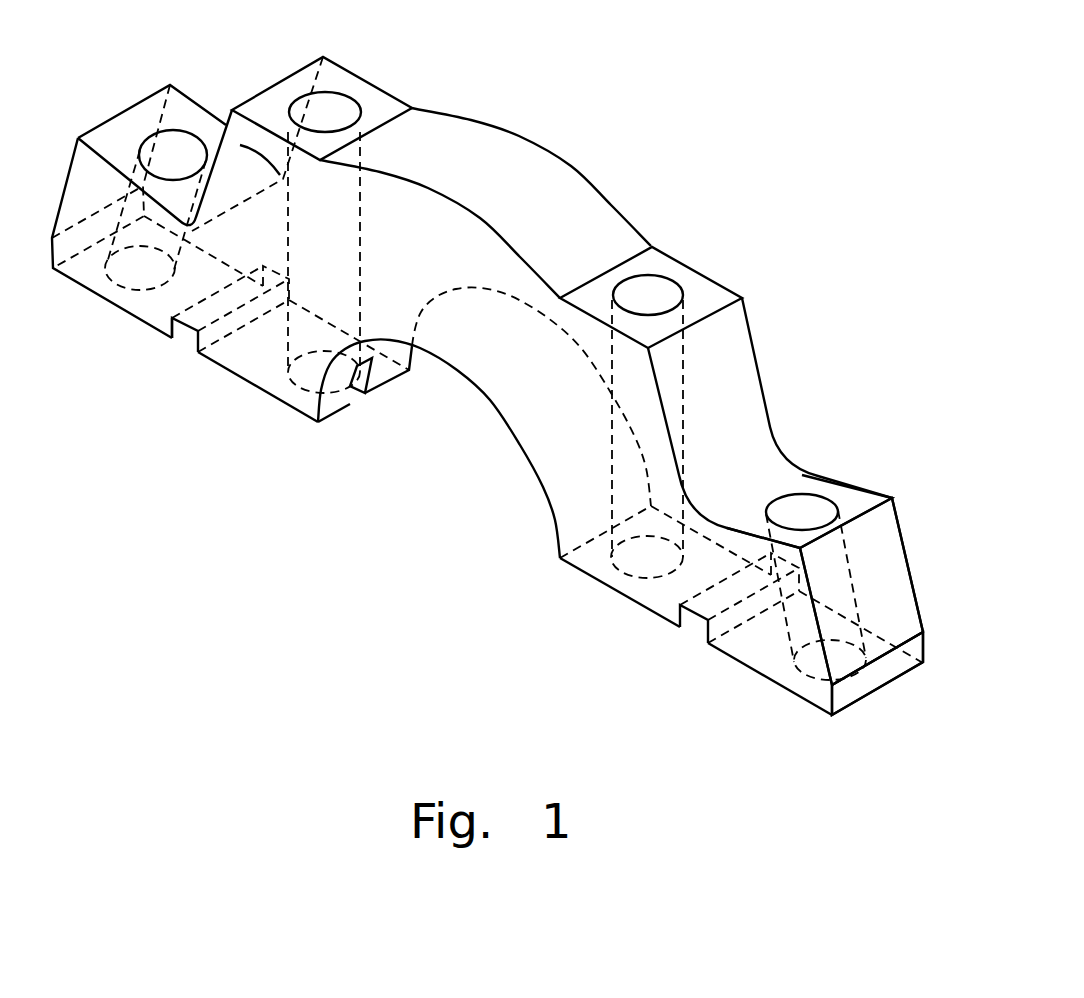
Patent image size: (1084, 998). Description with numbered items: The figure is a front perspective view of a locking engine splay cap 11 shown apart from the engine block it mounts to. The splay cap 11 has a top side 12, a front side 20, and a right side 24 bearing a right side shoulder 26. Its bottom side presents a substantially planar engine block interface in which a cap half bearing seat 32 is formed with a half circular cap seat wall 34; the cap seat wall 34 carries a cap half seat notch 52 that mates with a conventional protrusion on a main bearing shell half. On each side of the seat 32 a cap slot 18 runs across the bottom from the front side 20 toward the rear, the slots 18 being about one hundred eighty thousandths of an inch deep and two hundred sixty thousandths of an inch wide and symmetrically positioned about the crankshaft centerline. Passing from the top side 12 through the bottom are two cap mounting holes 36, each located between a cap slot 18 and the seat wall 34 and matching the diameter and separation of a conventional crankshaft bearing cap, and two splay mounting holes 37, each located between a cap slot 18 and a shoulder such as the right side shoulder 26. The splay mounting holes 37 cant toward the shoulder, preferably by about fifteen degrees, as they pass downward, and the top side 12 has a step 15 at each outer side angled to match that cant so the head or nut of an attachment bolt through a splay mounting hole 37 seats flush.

The splay cap 11 is at (568, 67).
The top side 12 is at (585, 215).
The step 15 is at (805, 480).
The cap slot 18 is at (187, 340).
The front side 20 is at (585, 555).
The right side 24 is at (880, 595).
The right side shoulder 26 is at (915, 660).
The cap half bearing seat 32 is at (484, 422).
The cap seat wall 34 is at (390, 373).
The cap mounting hole 36 is at (330, 97).
The splay mounting hole 37 is at (187, 133).
The cap half seat notch 52 is at (372, 360).